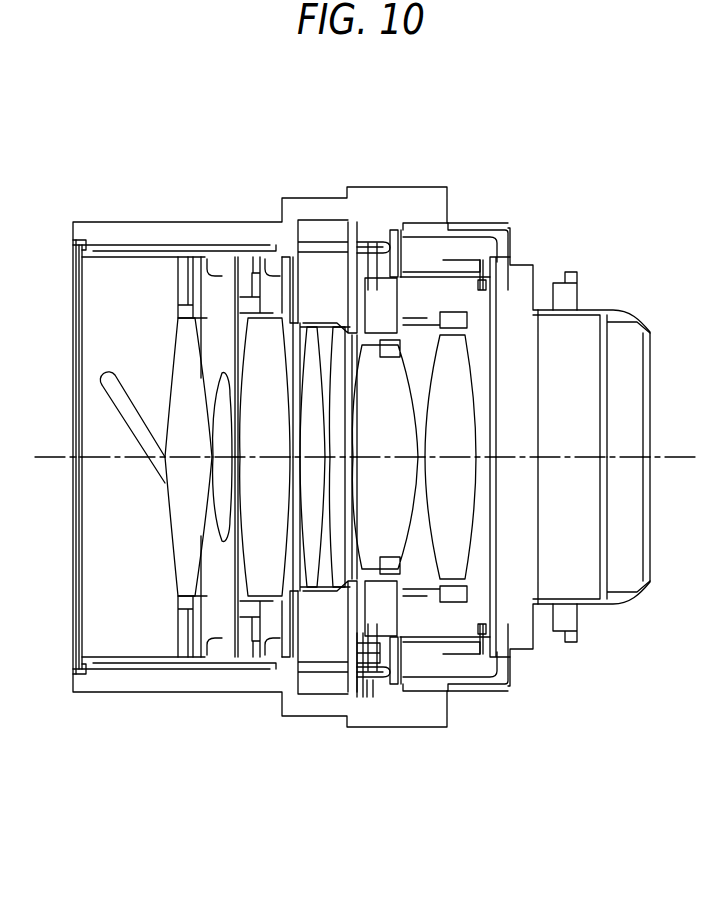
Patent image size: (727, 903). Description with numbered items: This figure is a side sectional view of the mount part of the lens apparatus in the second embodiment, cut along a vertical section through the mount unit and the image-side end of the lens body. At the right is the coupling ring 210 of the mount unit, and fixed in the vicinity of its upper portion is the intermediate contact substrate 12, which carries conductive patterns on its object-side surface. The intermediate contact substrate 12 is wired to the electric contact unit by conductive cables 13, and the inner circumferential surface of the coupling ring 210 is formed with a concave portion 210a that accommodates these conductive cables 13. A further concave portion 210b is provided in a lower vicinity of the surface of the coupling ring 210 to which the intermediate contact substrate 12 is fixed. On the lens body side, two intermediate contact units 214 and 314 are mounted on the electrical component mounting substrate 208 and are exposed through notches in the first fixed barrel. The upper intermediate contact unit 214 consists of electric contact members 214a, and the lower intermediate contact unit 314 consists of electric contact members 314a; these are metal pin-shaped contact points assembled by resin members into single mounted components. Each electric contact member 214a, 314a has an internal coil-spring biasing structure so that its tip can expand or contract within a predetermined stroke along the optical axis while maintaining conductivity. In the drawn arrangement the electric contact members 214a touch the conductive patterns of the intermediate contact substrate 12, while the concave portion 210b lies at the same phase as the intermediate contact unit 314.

The electrical component mounting substrate 208 is at (352, 265).
The intermediate contact unit 214 is at (380, 242).
The electric contact member 214a is at (388, 246).
The intermediate contact substrate 12 is at (403, 250).
The concave portion 210a is at (462, 247).
The conductive cables 13 is at (480, 262).
The coupling ring 210 is at (517, 283).
The concave portion 210b is at (440, 665).
The intermediate contact unit 314 is at (372, 683).
The electric contact member 314a is at (380, 682).